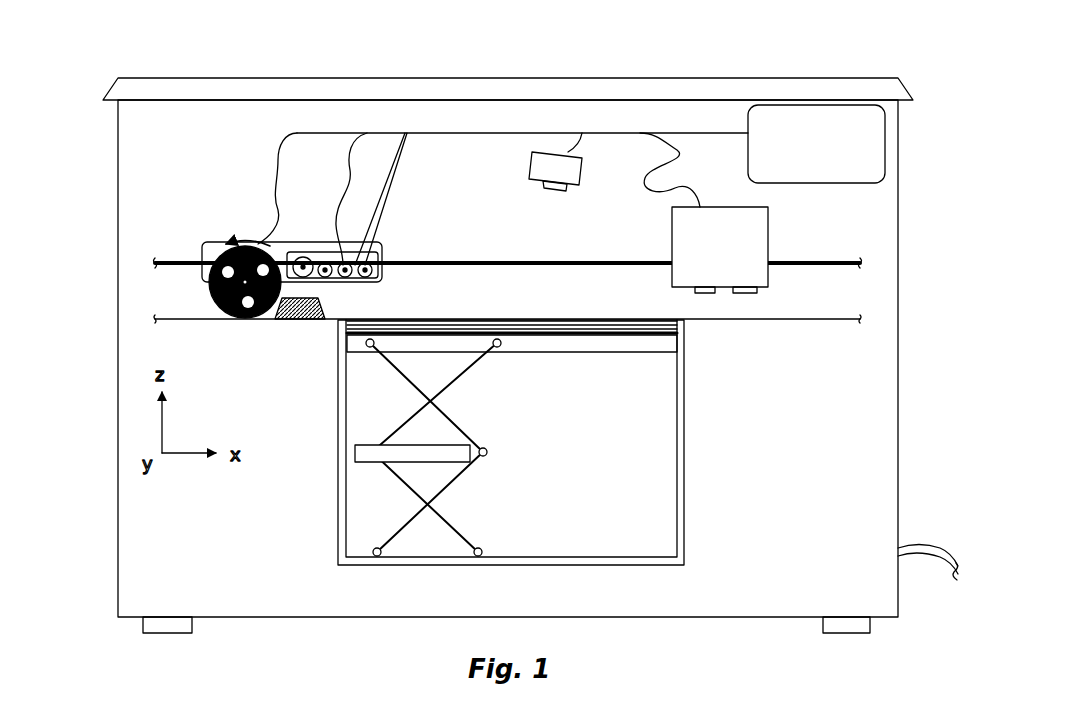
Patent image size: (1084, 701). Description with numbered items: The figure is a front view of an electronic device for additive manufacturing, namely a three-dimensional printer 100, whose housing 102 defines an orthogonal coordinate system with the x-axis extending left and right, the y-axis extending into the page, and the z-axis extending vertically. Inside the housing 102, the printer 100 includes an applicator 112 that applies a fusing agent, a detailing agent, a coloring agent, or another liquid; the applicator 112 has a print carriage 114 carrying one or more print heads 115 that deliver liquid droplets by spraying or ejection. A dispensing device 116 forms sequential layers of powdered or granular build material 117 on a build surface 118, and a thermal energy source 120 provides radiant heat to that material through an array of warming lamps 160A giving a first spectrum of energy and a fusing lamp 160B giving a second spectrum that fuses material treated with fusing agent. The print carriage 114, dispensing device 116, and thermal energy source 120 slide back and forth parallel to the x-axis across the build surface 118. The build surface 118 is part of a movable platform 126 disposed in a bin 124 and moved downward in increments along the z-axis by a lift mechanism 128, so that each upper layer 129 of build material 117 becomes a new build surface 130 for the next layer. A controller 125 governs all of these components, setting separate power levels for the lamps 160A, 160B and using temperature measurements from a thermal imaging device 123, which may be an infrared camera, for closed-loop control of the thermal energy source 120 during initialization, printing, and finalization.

The 3D printer 100 is at (134, 50).
The housing 102 is at (118, 250).
The applicator 112 is at (765, 225).
The print carriage 114 is at (768, 258).
The print heads 115 is at (748, 293).
The dispensing device 116 is at (210, 283).
The build material 117 is at (295, 320).
The build surface 118 is at (510, 332).
The thermal energy source 120 is at (373, 243).
The thermal imaging device 123 is at (553, 168).
The bin 124 is at (340, 548).
The controller 125 is at (787, 105).
The movable platform 126 is at (608, 345).
The lift mechanism 128 is at (458, 422).
The upper layer of build material 129 is at (638, 317).
The build surface for a subsequent layer 130 is at (527, 310).
The warming lamps 160A is at (322, 263).
The fusing lamp 160B is at (278, 168).